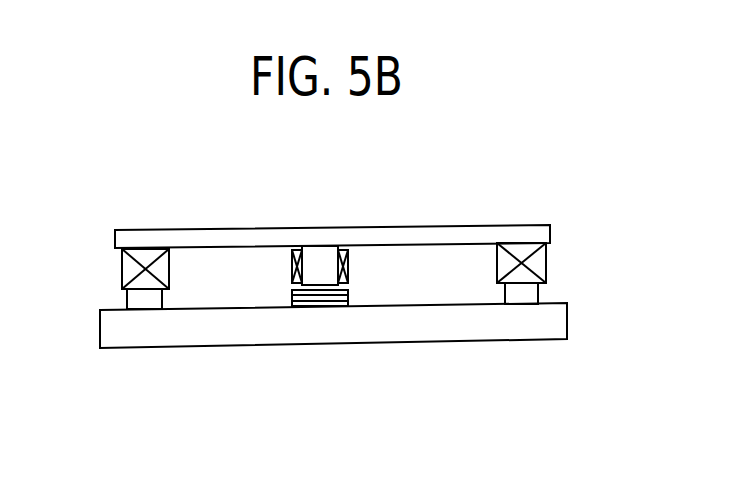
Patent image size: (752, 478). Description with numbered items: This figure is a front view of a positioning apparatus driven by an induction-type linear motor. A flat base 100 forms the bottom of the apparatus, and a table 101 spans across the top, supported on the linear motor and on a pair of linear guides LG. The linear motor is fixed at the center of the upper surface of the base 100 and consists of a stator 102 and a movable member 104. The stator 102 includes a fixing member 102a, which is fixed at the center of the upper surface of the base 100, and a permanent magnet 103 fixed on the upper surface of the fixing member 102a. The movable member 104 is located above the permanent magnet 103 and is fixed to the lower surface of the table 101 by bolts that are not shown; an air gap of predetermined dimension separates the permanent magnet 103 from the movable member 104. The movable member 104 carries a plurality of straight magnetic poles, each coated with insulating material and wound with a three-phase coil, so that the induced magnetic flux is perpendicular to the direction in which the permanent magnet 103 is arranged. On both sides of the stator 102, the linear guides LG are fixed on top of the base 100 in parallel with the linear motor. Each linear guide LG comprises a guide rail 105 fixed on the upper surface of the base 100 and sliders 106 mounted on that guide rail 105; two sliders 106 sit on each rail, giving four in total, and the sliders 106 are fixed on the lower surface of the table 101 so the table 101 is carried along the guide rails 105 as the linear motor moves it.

The base 100 is at (457, 332).
The table 101 is at (431, 230).
The stator 102 is at (281, 301).
The fixing member 102a is at (342, 297).
The permanent magnet 103 is at (350, 295).
The movable member 104 is at (279, 260).
The guide rails 105 is at (150, 302).
The sliders 106 is at (145, 262).
The linear guides LG is at (110, 272).